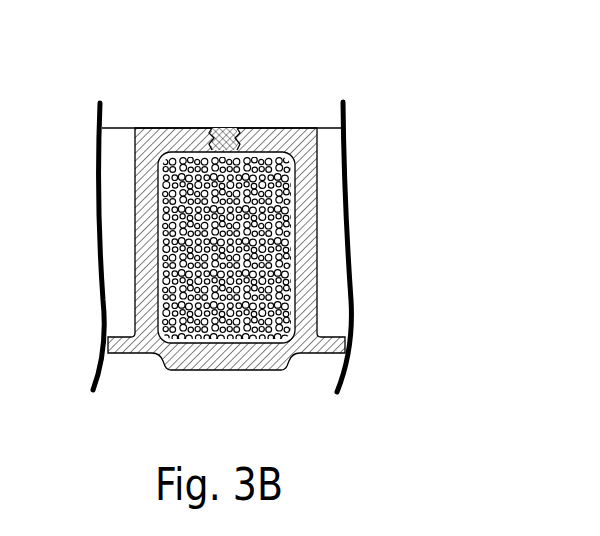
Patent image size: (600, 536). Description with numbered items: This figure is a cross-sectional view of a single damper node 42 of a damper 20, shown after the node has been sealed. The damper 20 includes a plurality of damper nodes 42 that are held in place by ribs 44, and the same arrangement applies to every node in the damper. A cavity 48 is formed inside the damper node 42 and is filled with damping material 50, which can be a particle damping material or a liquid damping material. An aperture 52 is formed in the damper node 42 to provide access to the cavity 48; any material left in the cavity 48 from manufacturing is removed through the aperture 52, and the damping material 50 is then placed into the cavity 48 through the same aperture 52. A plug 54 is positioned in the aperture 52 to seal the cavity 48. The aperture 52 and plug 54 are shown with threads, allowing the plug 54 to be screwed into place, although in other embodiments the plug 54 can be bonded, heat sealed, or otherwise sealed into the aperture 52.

The damper 20 is at (212, 202).
The damper node 42 is at (282, 150).
The ribs 44 is at (112, 193).
The cavity 48 is at (255, 158).
The damping material 50 is at (287, 273).
The aperture 52 is at (208, 143).
The plug 54 is at (225, 130).